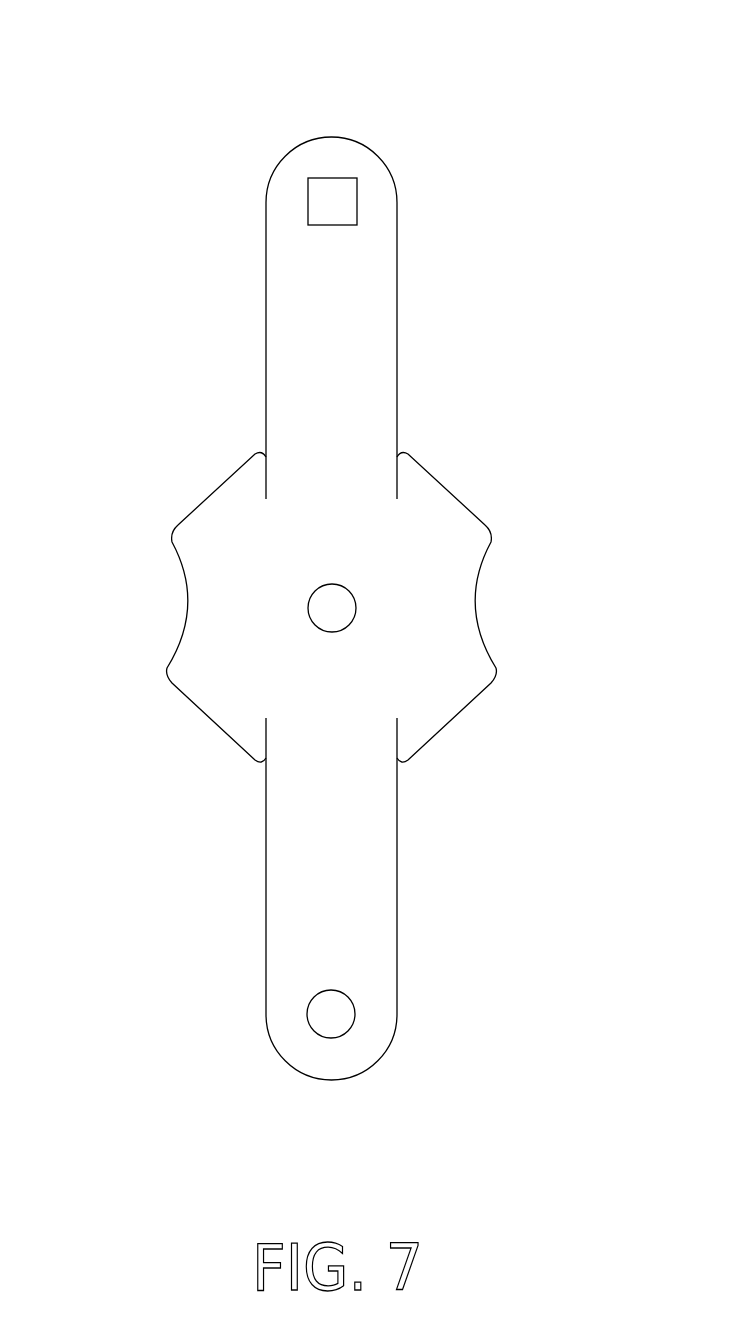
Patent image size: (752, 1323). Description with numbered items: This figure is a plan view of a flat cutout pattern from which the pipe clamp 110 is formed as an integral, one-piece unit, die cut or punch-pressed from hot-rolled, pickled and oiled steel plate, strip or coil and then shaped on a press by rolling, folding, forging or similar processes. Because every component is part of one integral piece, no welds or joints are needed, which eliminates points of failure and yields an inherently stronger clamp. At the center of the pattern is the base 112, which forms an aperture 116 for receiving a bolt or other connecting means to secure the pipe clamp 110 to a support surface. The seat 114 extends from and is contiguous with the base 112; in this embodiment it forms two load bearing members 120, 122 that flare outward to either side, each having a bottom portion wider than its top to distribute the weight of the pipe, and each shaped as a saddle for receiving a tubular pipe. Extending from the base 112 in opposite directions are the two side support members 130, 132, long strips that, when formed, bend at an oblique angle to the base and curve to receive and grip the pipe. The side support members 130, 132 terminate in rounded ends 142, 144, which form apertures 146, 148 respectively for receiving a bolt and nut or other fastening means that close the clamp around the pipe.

The pipe clamp 110 is at (333, 556).
The base 112 is at (333, 633).
The seat 114 is at (468, 502).
The aperture 116 is at (345, 615).
The load bearing member 120 is at (185, 628).
The load bearing member 122 is at (493, 658).
The side support member 130 is at (323, 258).
The side support member 132 is at (326, 906).
The end 142 is at (272, 170).
The end 144 is at (372, 1065).
The aperture 146 is at (352, 203).
The aperture 148 is at (348, 1026).